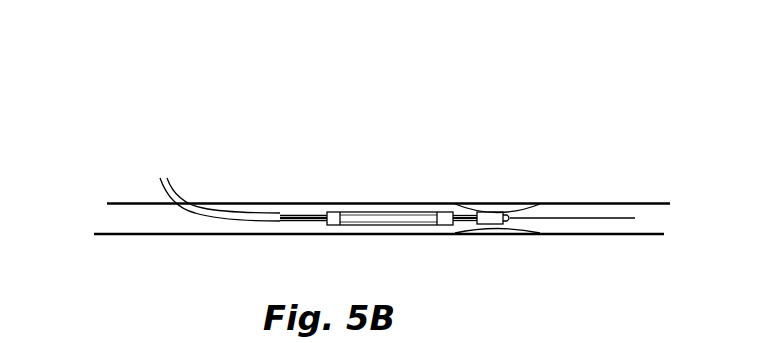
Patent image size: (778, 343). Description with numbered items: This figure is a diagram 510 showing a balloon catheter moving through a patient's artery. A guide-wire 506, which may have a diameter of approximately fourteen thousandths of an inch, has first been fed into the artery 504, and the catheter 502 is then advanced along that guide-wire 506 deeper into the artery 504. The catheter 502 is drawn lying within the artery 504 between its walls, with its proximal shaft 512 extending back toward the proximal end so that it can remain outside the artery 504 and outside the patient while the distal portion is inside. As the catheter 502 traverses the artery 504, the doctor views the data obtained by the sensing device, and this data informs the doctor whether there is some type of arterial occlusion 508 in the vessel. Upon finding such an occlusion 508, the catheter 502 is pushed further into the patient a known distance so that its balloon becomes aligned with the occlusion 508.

The diagram 510 is at (103, 79).
The proximal shaft 512 is at (219, 219).
The artery 504 is at (274, 203).
The catheter 502 is at (379, 212).
The arterial occlusion 508 is at (493, 212).
The guide-wire 506 is at (617, 218).